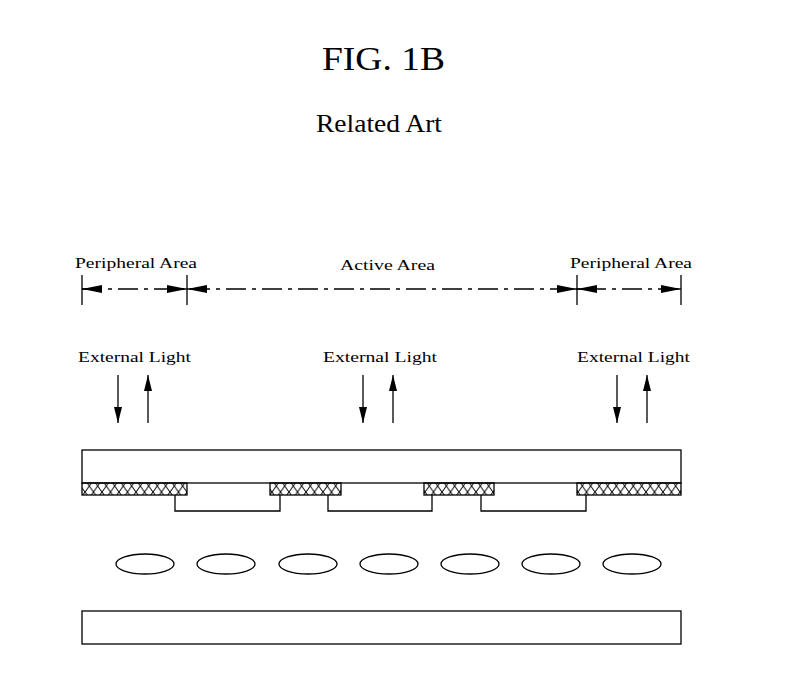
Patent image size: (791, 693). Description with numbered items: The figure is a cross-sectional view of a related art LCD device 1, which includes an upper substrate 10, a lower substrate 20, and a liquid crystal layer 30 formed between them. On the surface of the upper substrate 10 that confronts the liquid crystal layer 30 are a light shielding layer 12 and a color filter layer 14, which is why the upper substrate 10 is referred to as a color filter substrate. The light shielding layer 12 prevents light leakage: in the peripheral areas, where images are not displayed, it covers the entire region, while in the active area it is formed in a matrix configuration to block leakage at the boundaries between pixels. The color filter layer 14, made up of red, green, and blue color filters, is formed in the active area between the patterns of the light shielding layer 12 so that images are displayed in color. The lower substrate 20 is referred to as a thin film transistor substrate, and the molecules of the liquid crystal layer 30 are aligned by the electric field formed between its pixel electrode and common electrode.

The LCD device 1 is at (63, 417).
The upper substrate 10 is at (681, 464).
The light shielding layer 12 is at (681, 490).
The color filter layer 14 is at (586, 503).
The lower substrate 20 is at (681, 625).
The liquid crystal layer 30 is at (661, 562).